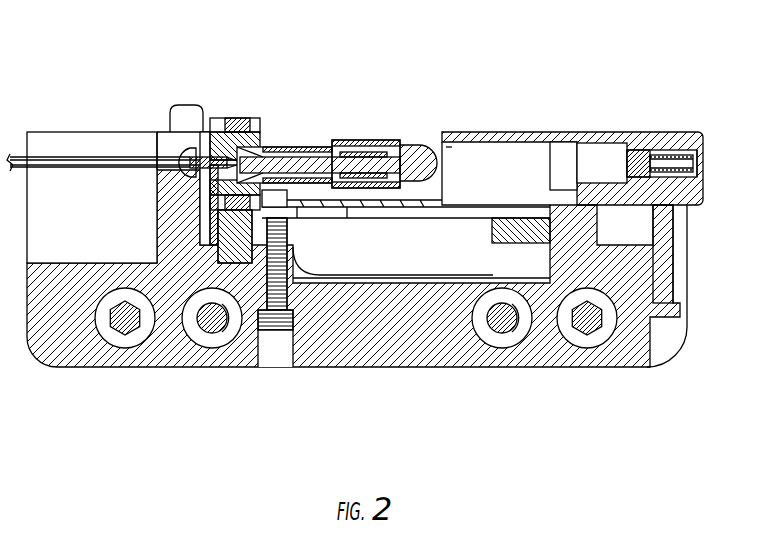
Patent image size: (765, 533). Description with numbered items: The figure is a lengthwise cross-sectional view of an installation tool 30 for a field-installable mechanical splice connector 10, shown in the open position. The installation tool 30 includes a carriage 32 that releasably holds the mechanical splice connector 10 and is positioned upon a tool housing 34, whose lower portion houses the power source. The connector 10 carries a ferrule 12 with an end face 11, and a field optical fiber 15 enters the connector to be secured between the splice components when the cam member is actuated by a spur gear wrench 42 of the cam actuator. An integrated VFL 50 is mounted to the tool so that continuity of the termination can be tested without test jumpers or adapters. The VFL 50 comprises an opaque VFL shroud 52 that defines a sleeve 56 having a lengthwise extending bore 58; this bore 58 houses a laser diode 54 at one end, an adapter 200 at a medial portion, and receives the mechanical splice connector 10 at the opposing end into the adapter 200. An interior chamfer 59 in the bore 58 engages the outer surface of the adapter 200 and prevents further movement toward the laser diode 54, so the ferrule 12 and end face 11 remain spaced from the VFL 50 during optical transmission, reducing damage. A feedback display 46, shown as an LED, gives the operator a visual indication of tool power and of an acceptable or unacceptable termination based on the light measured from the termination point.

The field optical fiber 15 is at (62, 160).
The feedback display 46 is at (174, 108).
The spur gear wrench 42 is at (237, 122).
The mechanical splice connector 10 is at (311, 147).
The ferrule 12 is at (347, 140).
The end face 11 is at (410, 145).
The lengthwise extending bore 58 is at (438, 146).
The sleeve 56 is at (500, 132).
The interior chamfer 59 is at (573, 132).
The VFL shroud 52 is at (608, 132).
The laser diode 54 is at (645, 132).
The installation tool 30 is at (716, 116).
The VFL 50 is at (706, 186).
The tool housing 34 is at (687, 285).
The carriage 32 is at (440, 230).
The adapter 200 is at (413, 200).